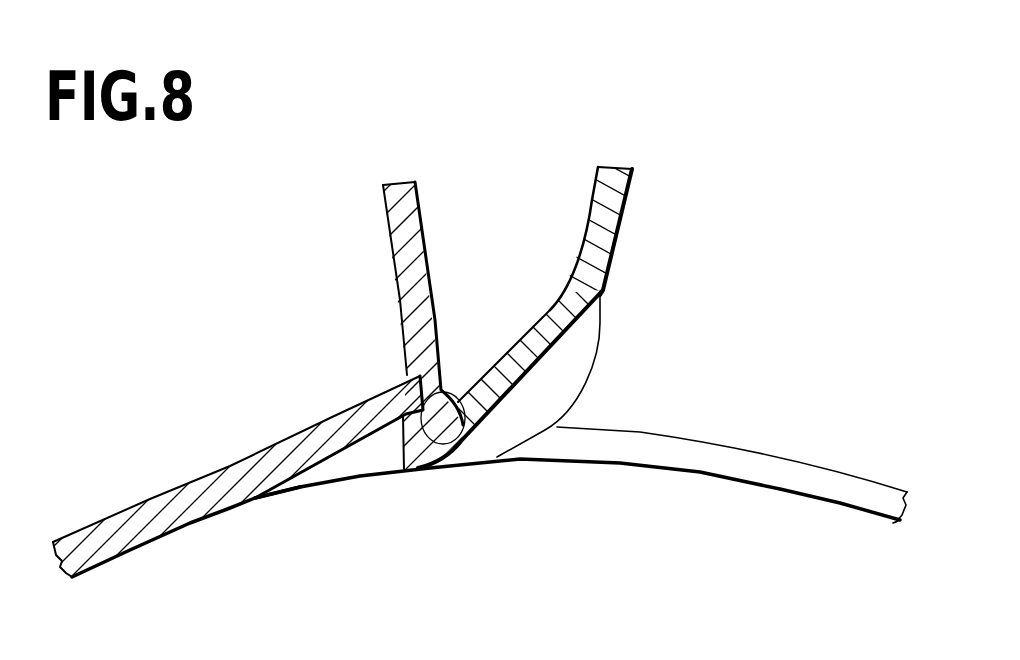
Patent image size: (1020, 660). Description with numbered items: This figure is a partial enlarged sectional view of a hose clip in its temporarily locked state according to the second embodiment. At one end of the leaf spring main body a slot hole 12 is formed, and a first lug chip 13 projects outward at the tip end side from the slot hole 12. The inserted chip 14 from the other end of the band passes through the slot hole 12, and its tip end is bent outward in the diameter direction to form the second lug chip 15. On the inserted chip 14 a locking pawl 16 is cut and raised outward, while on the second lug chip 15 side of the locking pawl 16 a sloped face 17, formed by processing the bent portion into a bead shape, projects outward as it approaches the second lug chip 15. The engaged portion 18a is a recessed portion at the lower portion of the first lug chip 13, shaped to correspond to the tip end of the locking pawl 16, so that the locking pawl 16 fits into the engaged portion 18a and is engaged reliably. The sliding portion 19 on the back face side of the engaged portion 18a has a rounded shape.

The slot hole 12 is at (713, 463).
The first lug chip 13 is at (400, 226).
The inserted chip 14 is at (163, 515).
The second lug chip 15 is at (610, 220).
The locking pawl 16 is at (328, 422).
The sloped face 17 is at (525, 333).
The engaged portion 18a is at (463, 427).
The sliding portion 19 is at (427, 467).